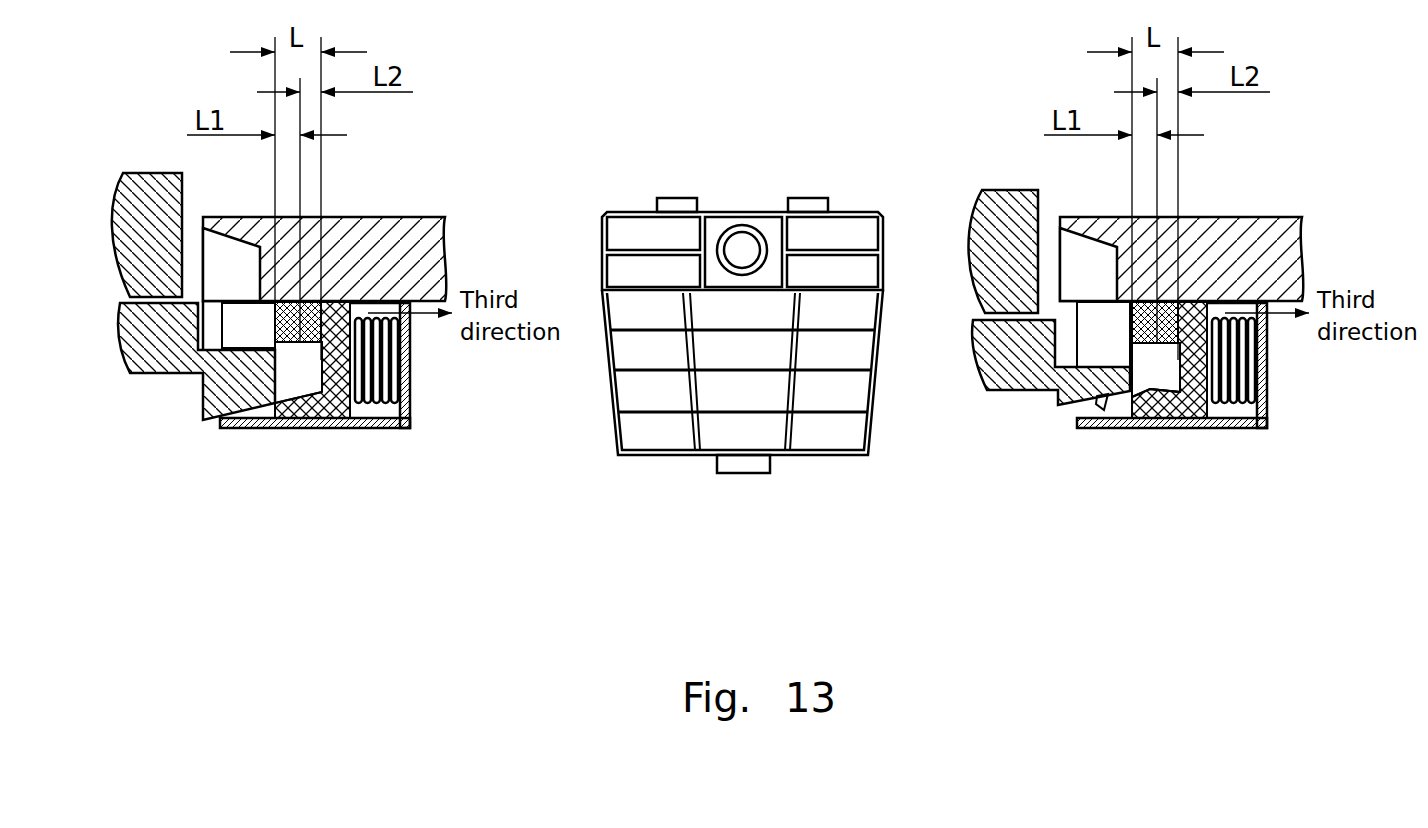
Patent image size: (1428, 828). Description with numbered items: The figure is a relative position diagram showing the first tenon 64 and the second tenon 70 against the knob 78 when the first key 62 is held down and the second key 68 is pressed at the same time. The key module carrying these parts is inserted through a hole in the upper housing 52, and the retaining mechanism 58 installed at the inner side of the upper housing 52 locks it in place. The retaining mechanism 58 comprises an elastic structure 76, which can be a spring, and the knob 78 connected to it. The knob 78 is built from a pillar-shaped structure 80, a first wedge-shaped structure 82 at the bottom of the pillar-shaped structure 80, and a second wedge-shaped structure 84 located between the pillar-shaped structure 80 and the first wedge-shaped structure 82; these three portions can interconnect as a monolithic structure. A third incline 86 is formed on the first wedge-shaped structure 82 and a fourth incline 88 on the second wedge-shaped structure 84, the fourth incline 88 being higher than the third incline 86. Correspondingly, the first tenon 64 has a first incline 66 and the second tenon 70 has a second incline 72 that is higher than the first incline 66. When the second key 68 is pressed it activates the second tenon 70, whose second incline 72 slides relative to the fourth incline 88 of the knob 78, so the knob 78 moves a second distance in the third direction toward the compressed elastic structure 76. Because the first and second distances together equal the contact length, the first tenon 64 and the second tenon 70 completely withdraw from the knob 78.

The upper housing 52 is at (420, 237).
The retaining mechanism 58 is at (426, 396).
The first key 62 is at (148, 192).
The first tenon 64 is at (220, 391).
The first incline 66 is at (222, 426).
The second key 68 is at (1003, 205).
The second tenon 70 is at (1078, 380).
The second incline 72 is at (1078, 403).
The elastic structure 76 is at (380, 405).
The knob 78 is at (355, 302).
The pillar-shaped structure 80 is at (313, 300).
The first wedge-shaped structure 82 is at (312, 429).
The second wedge-shaped structure 84 is at (1157, 425).
The third incline 86 is at (293, 426).
The fourth incline 88 is at (1130, 421).